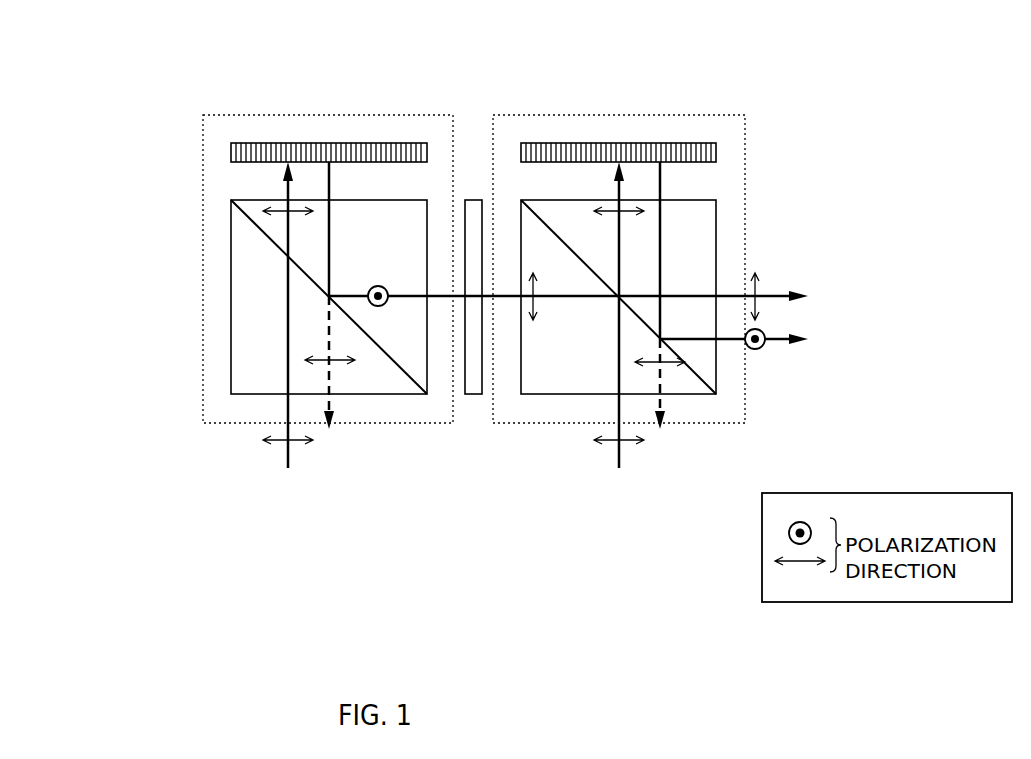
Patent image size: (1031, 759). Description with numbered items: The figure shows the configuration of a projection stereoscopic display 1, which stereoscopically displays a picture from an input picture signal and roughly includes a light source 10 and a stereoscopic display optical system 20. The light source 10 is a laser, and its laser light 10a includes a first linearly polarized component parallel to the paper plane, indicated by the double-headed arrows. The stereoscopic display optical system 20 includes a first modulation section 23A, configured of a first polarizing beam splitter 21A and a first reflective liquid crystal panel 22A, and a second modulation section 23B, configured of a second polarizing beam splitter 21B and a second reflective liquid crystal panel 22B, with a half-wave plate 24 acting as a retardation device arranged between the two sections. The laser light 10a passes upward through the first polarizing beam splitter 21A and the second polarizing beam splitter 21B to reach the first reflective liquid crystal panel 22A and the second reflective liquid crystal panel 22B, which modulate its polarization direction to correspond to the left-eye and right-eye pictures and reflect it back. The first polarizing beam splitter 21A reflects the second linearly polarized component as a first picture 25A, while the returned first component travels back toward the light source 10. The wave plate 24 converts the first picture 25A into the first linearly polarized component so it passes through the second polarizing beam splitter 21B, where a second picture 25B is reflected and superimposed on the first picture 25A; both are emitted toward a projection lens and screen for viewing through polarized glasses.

The projection stereoscopic display 1 is at (853, 86).
The light source 10 is at (639, 498).
The laser light 10a is at (288, 437).
The stereoscopic display optical system 20 is at (69, 26).
The first polarizing beam splitter 21A is at (242, 297).
The second polarizing beam splitter 21B is at (705, 240).
The first reflective liquid crystal panel 22A is at (241, 142).
The second reflective liquid crystal panel 22B is at (589, 142).
The first modulation section 23A is at (377, 114).
The second modulation section 23B is at (723, 114).
The λ/2 wave plate 24 is at (472, 198).
The first picture 25A is at (588, 297).
The second picture 25B is at (755, 339).